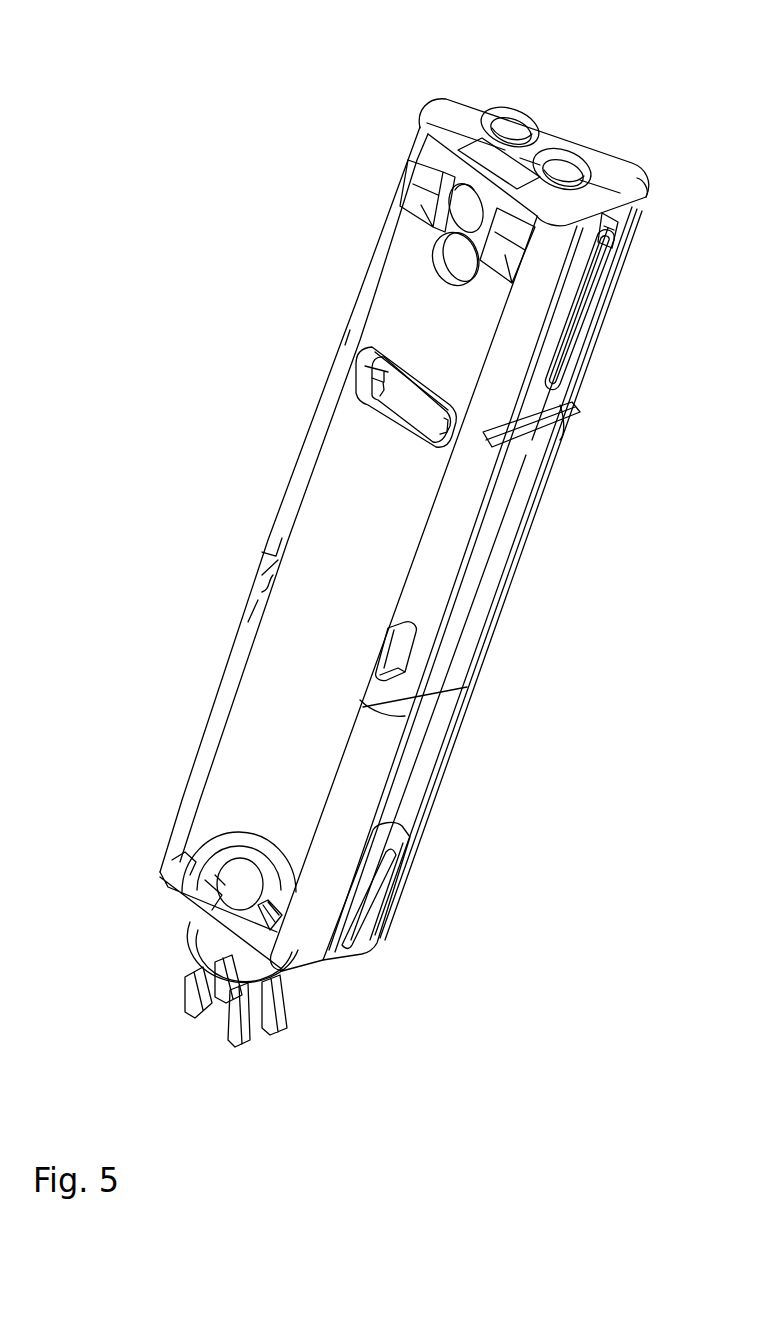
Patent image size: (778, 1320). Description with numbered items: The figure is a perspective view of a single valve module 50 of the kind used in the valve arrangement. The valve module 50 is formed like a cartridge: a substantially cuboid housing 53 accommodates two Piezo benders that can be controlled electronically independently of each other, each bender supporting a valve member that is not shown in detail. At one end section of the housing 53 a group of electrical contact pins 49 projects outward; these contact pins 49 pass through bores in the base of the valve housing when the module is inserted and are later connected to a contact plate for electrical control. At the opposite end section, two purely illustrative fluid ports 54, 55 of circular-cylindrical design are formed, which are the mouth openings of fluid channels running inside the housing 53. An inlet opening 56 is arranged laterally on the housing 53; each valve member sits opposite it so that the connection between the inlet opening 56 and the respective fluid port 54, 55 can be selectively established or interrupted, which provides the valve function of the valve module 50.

The contact pins 49 is at (252, 1062).
The valve module 50 is at (230, 160).
The housing 53 is at (252, 719).
The fluid port 54 is at (512, 125).
The fluid port 55 is at (565, 166).
The inlet opening 56 is at (407, 397).